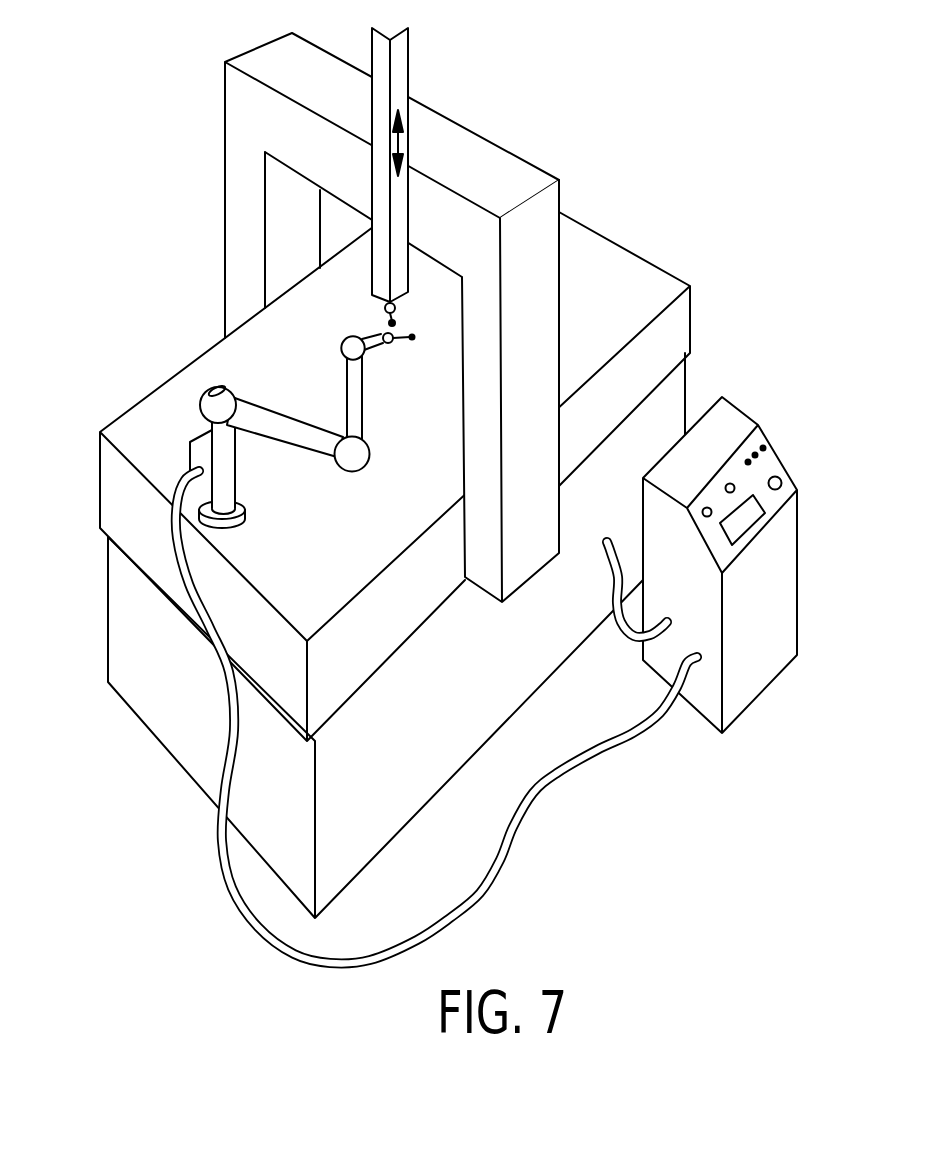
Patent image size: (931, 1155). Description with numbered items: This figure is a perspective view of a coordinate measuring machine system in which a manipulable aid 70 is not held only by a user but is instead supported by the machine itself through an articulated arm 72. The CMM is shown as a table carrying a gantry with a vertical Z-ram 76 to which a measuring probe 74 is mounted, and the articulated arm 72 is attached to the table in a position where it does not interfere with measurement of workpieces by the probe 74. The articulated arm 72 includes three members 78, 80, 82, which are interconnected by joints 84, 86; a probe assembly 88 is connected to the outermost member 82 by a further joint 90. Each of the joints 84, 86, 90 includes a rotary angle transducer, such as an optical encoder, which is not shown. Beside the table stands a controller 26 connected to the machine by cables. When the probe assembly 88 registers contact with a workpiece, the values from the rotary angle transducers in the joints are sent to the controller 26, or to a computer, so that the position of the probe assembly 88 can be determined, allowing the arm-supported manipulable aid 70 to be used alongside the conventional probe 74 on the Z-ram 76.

The controller 26 is at (784, 547).
The manipulable aid 70 is at (395, 473).
The articulated arm 72 is at (251, 430).
The probe 74 is at (388, 321).
The Z-ram 76 is at (399, 61).
The member 78 is at (225, 481).
The member 80 is at (314, 442).
The member 82 is at (358, 418).
The joint 84 is at (212, 404).
The joint 86 is at (358, 455).
The probe assembly 88 is at (396, 341).
The joint 90 is at (350, 348).